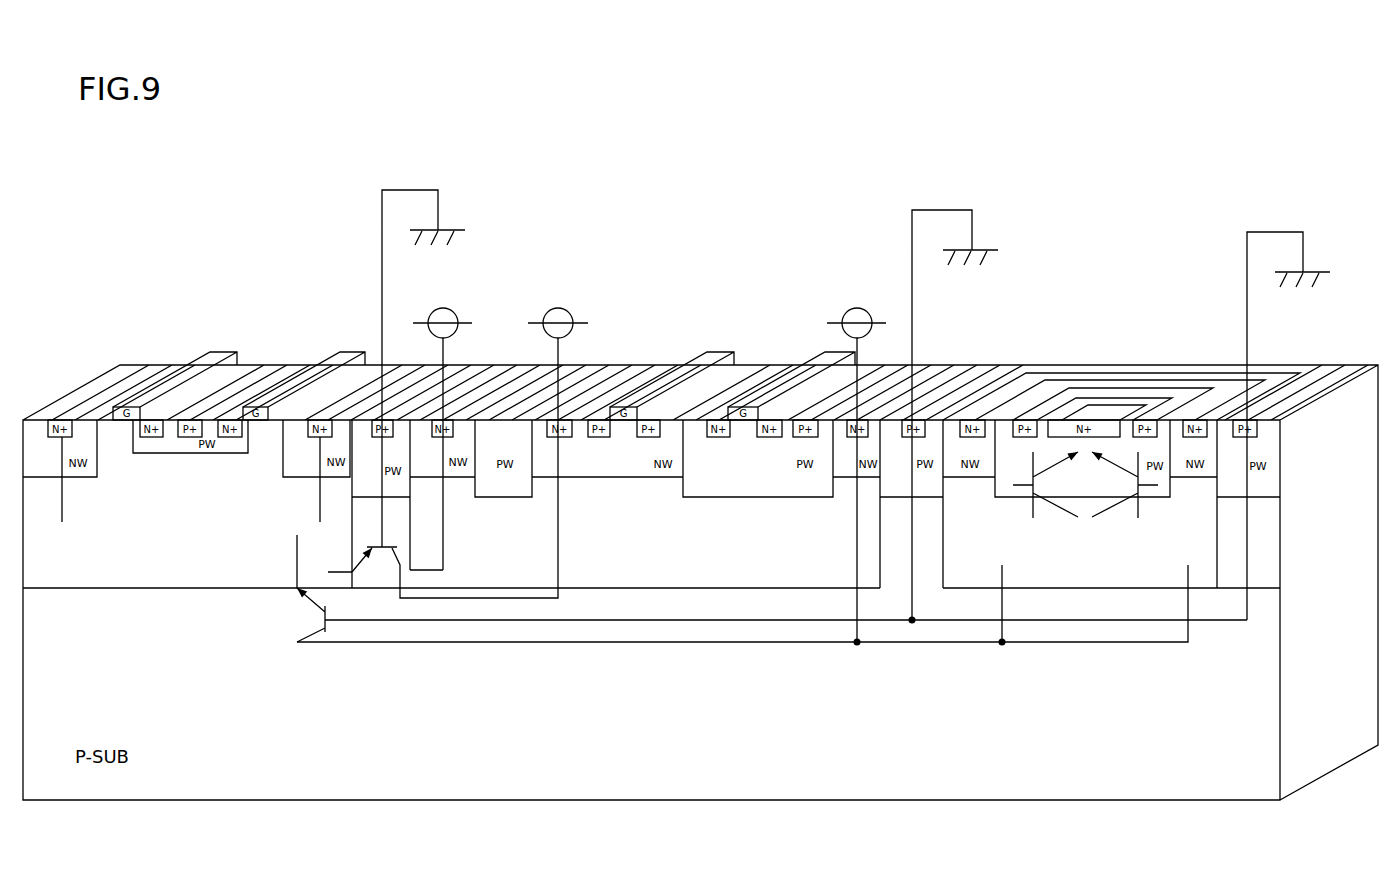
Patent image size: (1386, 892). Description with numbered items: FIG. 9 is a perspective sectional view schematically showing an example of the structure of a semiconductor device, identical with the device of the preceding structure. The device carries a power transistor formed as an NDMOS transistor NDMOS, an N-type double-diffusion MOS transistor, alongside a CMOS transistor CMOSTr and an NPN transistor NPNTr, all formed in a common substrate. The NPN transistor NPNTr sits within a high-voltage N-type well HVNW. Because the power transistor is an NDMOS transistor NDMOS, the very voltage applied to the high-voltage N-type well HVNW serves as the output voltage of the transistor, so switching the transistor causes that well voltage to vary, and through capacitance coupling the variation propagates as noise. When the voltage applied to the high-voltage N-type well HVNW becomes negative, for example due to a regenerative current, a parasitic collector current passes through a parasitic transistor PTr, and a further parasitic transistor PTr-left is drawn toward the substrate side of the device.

The parasitic transistor PTr is at (362, 572).
The parasitic PNP transistor (substrate) PTr-left is at (293, 588).
The NPN transistor NPNTr is at (1085, 425).
The high-voltage N-type well HVNW is at (977, 574).
The NDMOS transistor NDMOS is at (195, 479).
The CMOS transistor CMOSTr is at (728, 329).